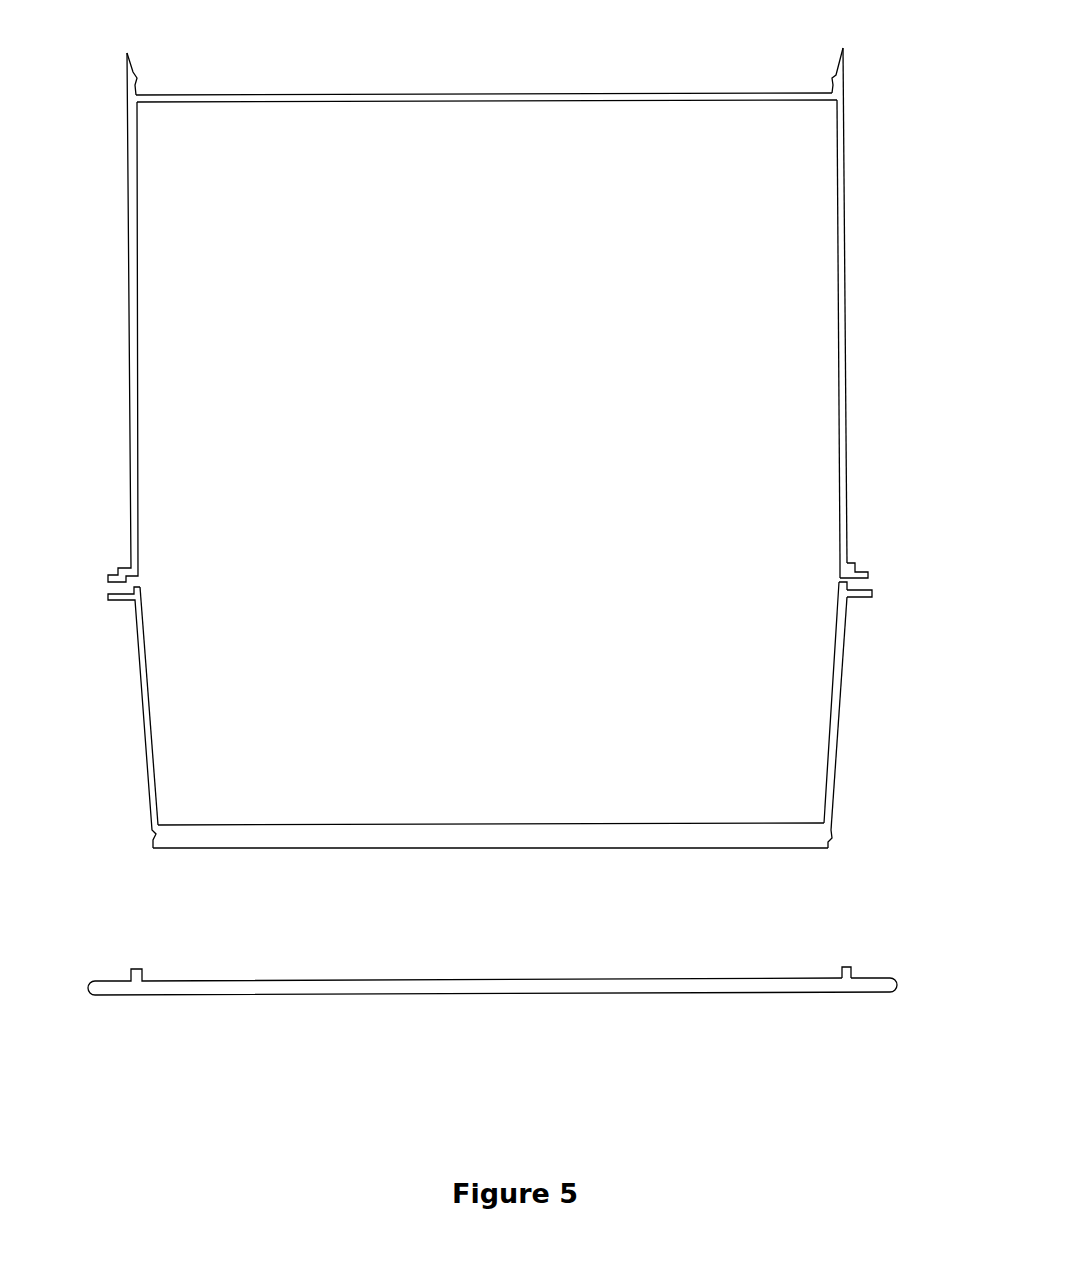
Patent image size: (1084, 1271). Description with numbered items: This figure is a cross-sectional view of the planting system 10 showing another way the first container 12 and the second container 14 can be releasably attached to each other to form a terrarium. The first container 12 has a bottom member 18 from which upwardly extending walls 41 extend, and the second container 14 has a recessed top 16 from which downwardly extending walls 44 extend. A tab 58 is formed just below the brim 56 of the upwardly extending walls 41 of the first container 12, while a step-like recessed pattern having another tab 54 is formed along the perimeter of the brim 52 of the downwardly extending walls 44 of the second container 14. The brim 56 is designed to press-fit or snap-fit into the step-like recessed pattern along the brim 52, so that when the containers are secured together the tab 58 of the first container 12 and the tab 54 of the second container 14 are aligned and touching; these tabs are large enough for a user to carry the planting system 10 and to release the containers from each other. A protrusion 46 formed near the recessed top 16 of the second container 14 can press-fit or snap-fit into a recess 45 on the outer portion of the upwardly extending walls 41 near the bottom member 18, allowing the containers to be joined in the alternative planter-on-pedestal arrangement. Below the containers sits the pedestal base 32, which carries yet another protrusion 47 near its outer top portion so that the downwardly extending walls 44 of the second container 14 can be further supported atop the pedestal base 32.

The planting system 10 is at (396, 1048).
The first container 12 is at (143, 712).
The second container 14 is at (129, 483).
The recessed top 16 is at (620, 92).
The bottom member 18 is at (528, 848).
The pedestal base 32 is at (895, 975).
The upwardly extending walls 41 is at (838, 725).
The downwardly extending walls 44 is at (850, 403).
The recess 45 is at (835, 832).
The protrusion 46 is at (830, 73).
The protrusion 47 is at (842, 967).
The brim 52 is at (838, 572).
The tab 54 is at (870, 565).
The brim 56 is at (840, 592).
The tab 58 is at (872, 594).